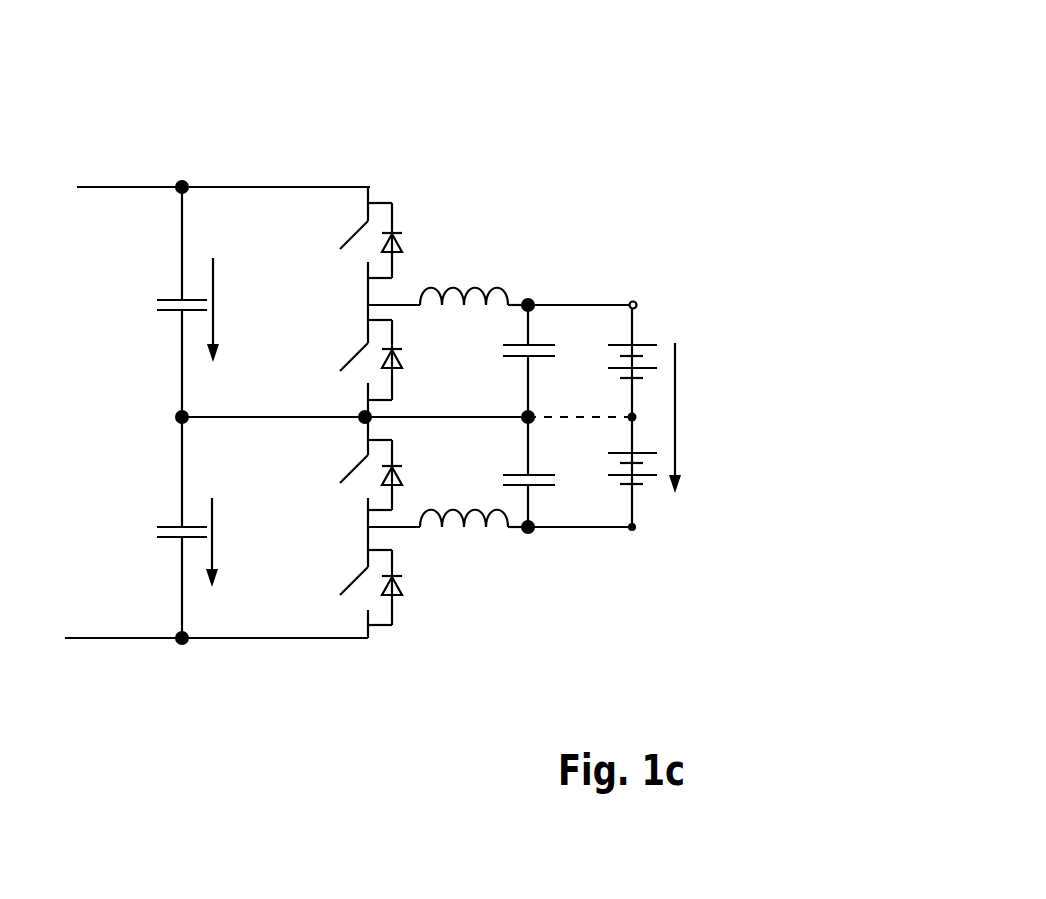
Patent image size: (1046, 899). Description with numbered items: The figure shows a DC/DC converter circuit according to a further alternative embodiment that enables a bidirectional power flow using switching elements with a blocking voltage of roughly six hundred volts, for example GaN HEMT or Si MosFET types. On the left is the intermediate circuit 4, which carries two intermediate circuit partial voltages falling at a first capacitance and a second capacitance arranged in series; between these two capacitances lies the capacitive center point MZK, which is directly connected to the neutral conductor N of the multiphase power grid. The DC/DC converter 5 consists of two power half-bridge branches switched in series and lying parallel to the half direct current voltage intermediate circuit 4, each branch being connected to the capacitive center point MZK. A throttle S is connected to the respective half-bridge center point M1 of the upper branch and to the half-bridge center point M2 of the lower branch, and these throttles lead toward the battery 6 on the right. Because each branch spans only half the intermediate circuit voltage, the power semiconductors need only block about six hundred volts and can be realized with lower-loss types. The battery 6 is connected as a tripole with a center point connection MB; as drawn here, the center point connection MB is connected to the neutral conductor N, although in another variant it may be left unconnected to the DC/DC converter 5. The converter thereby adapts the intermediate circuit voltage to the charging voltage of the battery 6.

The intermediate circuit 4 is at (178, 108).
The DC/DC converter 5 is at (474, 152).
The battery 6 is at (731, 258).
The half-bridge center point M1 is at (367, 305).
The half-bridge center point M2 is at (363, 528).
The throttle S is at (472, 290).
The neutral conductor N is at (180, 420).
The center point MZK is at (181, 416).
The center point connection MB is at (634, 419).